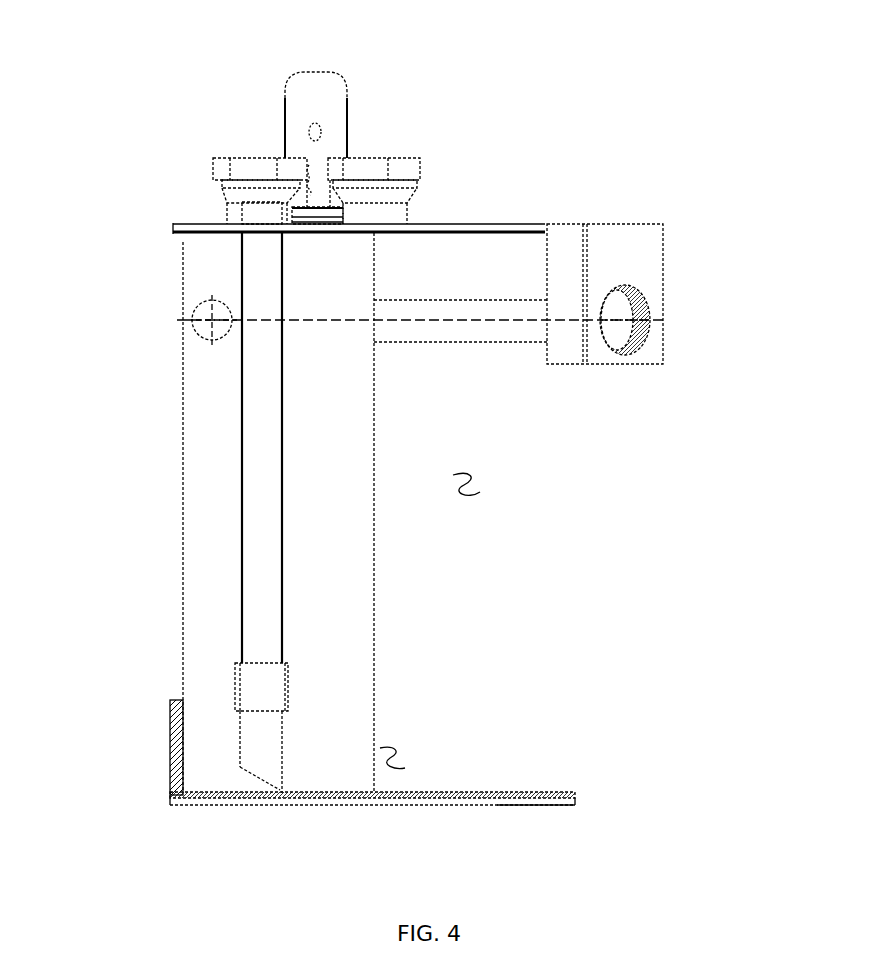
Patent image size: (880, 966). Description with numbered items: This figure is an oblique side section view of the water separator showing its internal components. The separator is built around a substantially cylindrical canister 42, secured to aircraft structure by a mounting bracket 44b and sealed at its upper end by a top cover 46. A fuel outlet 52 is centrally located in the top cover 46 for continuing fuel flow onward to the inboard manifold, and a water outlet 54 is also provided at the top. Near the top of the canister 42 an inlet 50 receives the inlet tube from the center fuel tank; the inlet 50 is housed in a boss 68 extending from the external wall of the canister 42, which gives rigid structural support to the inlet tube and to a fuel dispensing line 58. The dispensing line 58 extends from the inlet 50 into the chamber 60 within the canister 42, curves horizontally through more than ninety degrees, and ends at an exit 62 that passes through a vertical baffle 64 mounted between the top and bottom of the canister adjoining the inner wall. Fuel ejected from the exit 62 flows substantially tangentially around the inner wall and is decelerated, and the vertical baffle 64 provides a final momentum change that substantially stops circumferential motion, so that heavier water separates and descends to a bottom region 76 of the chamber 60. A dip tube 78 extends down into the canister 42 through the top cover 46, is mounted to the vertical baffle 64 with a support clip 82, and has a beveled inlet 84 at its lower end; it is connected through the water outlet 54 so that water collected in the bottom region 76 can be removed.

The canister 42 is at (170, 767).
The mounting bracket 44b is at (307, 72).
The top cover 46 is at (515, 223).
The inlet 50 is at (650, 308).
The fuel outlet 52 is at (377, 158).
The water outlet 54 is at (250, 157).
The fuel dispensing line 58 is at (455, 342).
The chamber 60 is at (470, 488).
The exit 62 is at (197, 332).
The vertical baffle 64 is at (374, 528).
The boss 68 is at (615, 245).
The bottom region 76 is at (393, 757).
The dip tube 78 is at (241, 547).
The support clip 82 is at (237, 663).
The beveled inlet 84 is at (260, 778).